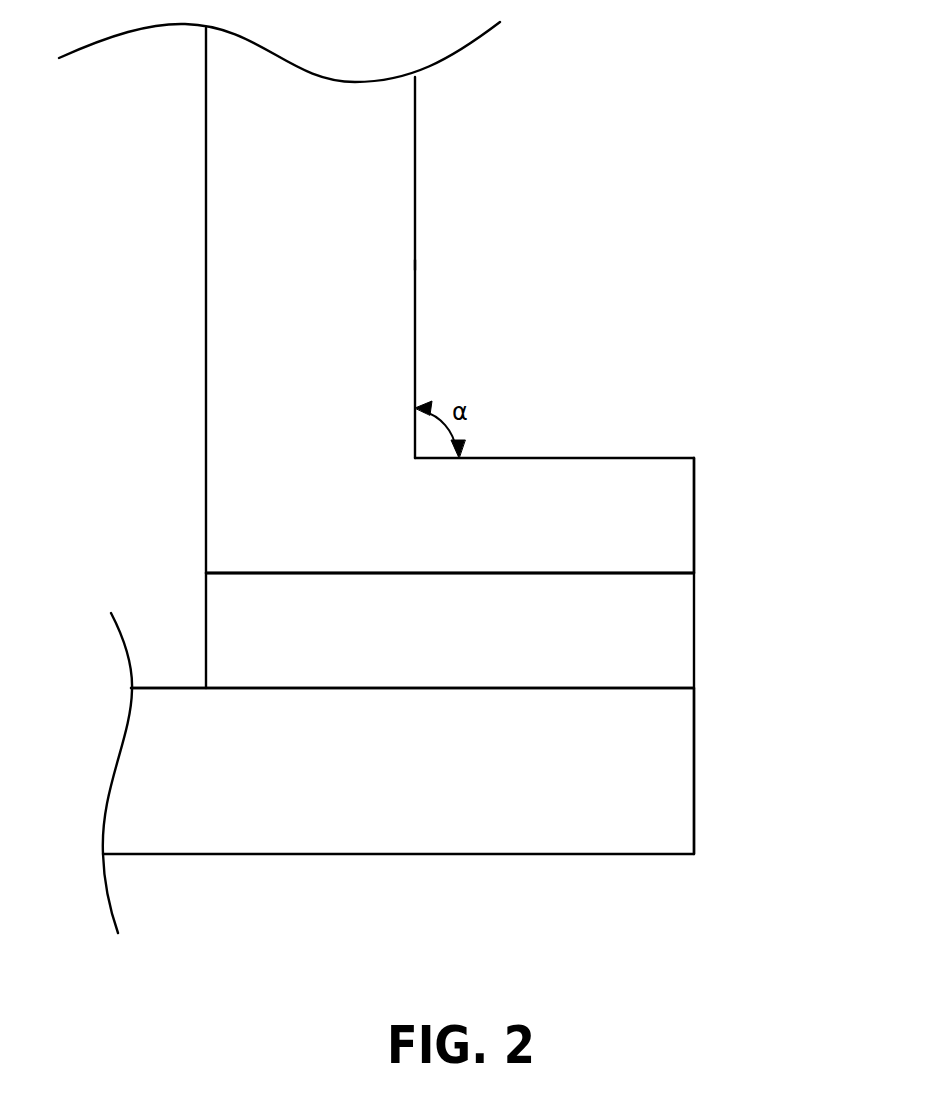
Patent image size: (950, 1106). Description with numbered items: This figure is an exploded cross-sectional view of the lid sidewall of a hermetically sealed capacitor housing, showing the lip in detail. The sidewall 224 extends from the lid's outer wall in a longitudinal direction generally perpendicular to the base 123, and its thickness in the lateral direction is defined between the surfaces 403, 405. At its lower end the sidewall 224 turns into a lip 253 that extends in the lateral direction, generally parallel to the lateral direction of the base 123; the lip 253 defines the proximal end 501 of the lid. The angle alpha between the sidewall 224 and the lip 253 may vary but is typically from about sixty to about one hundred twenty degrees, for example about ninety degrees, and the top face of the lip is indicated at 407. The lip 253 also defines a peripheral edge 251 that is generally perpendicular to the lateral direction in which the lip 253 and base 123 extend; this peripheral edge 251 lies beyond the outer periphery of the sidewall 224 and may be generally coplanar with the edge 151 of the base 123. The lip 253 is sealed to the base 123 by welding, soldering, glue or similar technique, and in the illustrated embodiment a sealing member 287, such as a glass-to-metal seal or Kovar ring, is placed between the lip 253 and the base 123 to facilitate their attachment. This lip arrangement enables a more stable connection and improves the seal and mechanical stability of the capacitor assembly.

The base 123 is at (475, 782).
The edge of the base 151 is at (694, 760).
The sidewall 224 is at (415, 170).
The peripheral edge 251 is at (694, 510).
The lip 253 is at (638, 458).
The sealing member 287 is at (475, 641).
The surface of the sidewall 403 is at (206, 337).
The surface of the sidewall 405 is at (415, 300).
The top surface of step portion 407 is at (517, 458).
The proximal end 501 is at (647, 575).